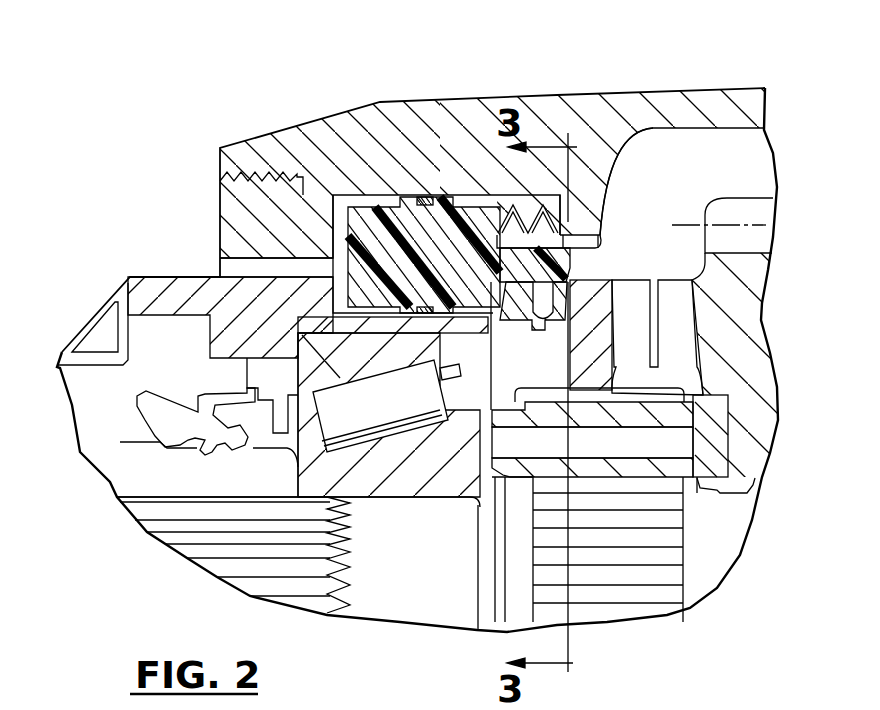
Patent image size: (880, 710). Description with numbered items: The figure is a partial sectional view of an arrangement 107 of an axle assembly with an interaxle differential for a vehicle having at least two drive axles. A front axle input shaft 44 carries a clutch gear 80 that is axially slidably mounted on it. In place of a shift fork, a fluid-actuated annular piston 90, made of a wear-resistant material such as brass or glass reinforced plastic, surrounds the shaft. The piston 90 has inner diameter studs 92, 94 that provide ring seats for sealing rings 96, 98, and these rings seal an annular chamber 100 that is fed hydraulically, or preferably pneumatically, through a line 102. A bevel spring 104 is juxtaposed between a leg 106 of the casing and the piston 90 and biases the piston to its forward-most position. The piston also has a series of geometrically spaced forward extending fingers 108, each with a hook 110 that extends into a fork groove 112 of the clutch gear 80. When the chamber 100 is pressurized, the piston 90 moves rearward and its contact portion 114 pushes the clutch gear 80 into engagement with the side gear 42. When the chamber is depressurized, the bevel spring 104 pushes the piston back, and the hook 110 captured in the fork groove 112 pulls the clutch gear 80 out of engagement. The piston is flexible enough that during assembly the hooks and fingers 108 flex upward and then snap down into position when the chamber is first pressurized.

The side gear 42 is at (712, 198).
The front axle input shaft 44 is at (389, 603).
The clutch gear 80 is at (530, 375).
The fluid-actuated annular piston 90 is at (358, 230).
The inner diameter stud 92 is at (405, 316).
The inner diameter stud 94 is at (410, 196).
The sealing ring 96 is at (423, 314).
The sealing ring 98 is at (432, 196).
The annular chamber 100 is at (340, 198).
The line 102 is at (228, 266).
The bevel spring 104 is at (520, 212).
The leg of the casing 106 is at (583, 217).
The arrangement 107 is at (358, 86).
The forward extending fingers 108 is at (606, 242).
The hook 110 is at (567, 283).
The fork groove 112 is at (556, 322).
The contact portion 114 is at (510, 287).